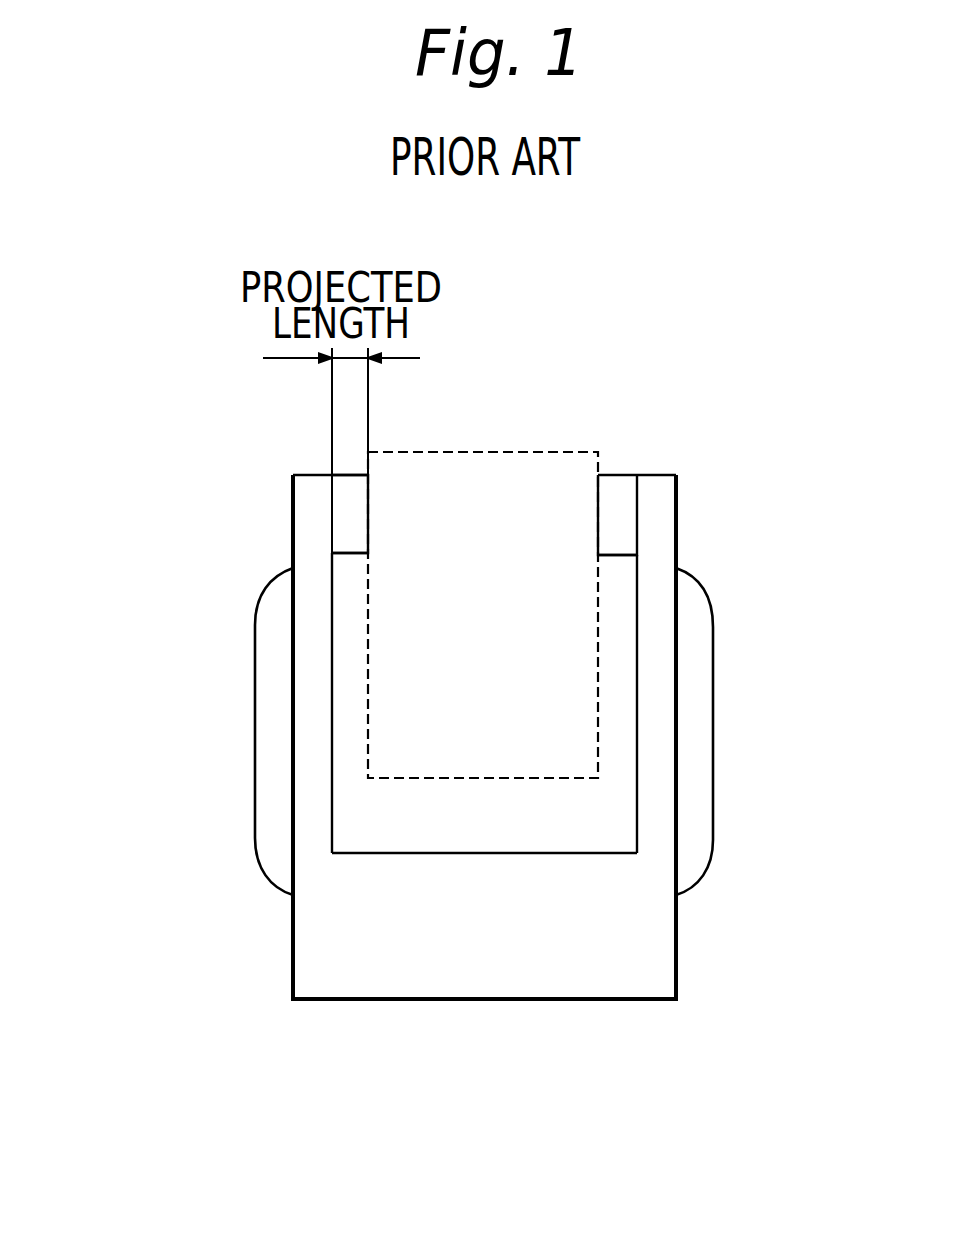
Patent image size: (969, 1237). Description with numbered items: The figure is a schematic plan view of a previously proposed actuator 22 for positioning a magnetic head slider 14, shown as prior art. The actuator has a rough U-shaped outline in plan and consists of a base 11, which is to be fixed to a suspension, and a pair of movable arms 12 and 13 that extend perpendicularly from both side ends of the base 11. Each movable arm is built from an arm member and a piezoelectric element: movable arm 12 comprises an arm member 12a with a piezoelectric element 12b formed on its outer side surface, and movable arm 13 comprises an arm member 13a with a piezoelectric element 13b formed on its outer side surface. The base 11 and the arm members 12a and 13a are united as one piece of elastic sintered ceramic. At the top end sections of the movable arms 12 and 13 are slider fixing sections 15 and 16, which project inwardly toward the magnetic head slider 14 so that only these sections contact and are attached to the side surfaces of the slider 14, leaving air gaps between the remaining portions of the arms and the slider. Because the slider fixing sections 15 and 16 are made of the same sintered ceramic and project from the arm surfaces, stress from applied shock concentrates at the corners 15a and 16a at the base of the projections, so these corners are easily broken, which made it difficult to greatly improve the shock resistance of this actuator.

The base 11 is at (493, 978).
The movable arm 12 is at (813, 663).
The arm member 12a is at (647, 697).
The piezoelectric element 12b is at (690, 750).
The movable arm 13 is at (117, 677).
The arm member 13a is at (313, 697).
The piezoelectric element 13b is at (273, 758).
The magnetic head slider 14 is at (515, 447).
The slider fixing section 15 is at (614, 503).
The corner 15a is at (630, 563).
The slider fixing section 16 is at (350, 515).
The corner 16a is at (340, 562).
The electromagnetic actuator (prior art) 22 is at (748, 472).